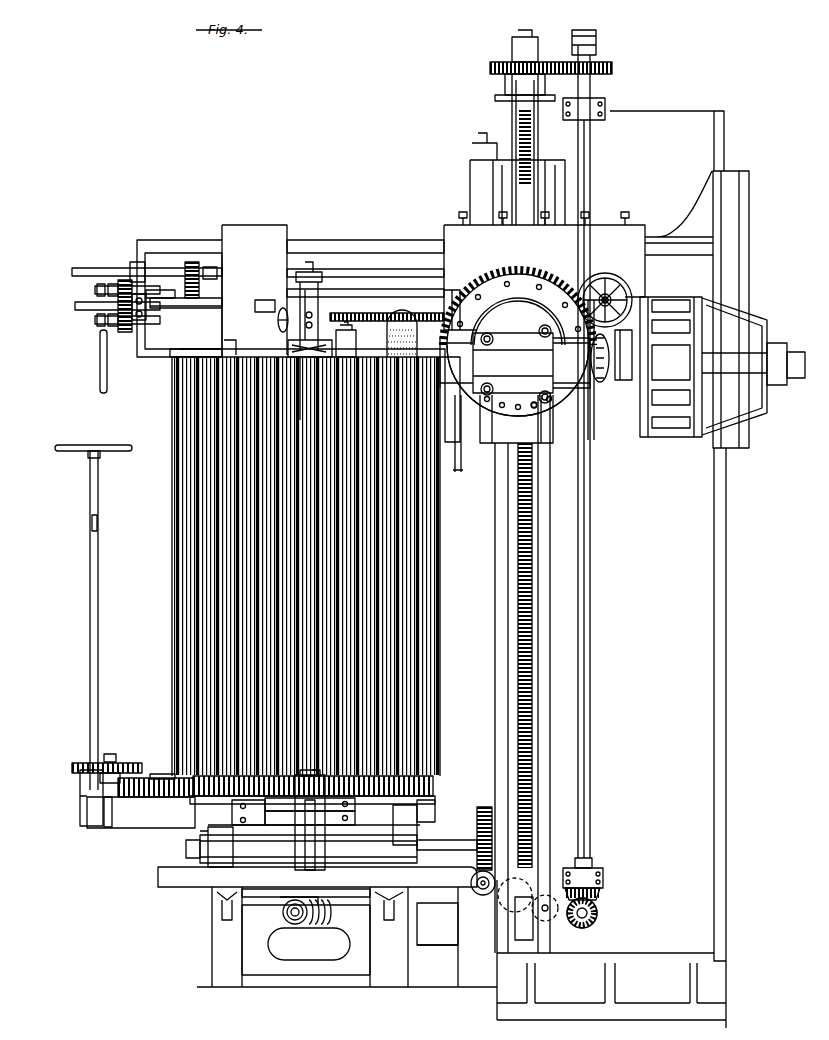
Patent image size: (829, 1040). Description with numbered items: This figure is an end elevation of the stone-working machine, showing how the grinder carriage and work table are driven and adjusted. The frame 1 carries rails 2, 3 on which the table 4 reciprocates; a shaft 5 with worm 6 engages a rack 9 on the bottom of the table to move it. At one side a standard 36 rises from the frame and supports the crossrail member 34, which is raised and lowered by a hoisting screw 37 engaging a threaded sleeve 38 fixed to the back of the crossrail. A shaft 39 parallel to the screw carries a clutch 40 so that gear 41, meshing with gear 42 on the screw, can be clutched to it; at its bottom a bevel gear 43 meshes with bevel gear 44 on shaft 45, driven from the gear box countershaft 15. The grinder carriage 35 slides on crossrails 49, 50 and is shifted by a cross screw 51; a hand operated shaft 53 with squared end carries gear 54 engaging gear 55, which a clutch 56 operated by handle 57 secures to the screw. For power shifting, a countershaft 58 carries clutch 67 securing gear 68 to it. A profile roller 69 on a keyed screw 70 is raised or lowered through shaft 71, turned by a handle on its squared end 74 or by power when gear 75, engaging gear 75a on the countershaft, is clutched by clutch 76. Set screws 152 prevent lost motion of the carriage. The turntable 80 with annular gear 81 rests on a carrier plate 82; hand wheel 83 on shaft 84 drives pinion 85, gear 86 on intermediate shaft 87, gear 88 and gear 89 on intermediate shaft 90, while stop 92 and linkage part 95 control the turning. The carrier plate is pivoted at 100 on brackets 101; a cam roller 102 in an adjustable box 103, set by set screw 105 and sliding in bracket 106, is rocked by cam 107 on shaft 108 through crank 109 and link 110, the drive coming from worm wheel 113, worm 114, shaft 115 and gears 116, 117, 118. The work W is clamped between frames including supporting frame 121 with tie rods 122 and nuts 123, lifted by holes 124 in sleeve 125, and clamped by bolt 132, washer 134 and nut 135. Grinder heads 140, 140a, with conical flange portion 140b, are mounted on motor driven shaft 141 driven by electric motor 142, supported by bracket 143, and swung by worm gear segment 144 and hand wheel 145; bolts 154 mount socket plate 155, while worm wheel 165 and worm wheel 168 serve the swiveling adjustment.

The frame 1 is at (202, 948).
The rail 2 is at (212, 898).
The rail 3 is at (400, 914).
The table 4 is at (158, 877).
The shaft 5 is at (356, 912).
The worm 6 is at (284, 902).
The rack 9 is at (308, 897).
The countershaft 15 is at (548, 895).
The crossrail member 34 is at (136, 247).
The grinder carriage 35 is at (544, 277).
The standard 36 is at (718, 624).
The hoisting screw 37 is at (518, 636).
The threaded sleeve 38 is at (520, 191).
The shaft 39 is at (575, 553).
The clutch 40 is at (596, 34).
The gear 41 is at (612, 68).
The gear 42 is at (490, 66).
The bevel gear 43 is at (602, 892).
The bevel gear 44 is at (598, 915).
The shaft 45 is at (580, 928).
The crossrail 49 is at (380, 240).
The crossrail 50 is at (175, 360).
The cross screw 51 is at (184, 315).
The hand operated shaft 53 is at (75, 306).
The gear 54 is at (148, 298).
The gear 55 is at (124, 334).
The clutch 56 is at (100, 326).
The handle 57 is at (100, 370).
The countershaft 58 is at (447, 282).
The clutch 67 is at (95, 289).
The gear 68 is at (130, 266).
The profile roller 69 is at (458, 474).
The screw 70 is at (516, 419).
The shaft 71 is at (400, 269).
The squared end 74 is at (72, 270).
The gear 75 is at (192, 260).
The gear 75a is at (258, 301).
The clutch 76 is at (245, 290).
The turntable 80 is at (435, 798).
The annular gear 81 is at (240, 790).
The carrier plate 82 is at (172, 808).
The hand wheel 83 is at (62, 452).
The shaft 84 is at (90, 645).
The pinion 85 is at (82, 778).
The gear 86 is at (75, 763).
The intermediate shaft 87 is at (110, 754).
The gear 88 is at (110, 810).
The gear 89 is at (140, 797).
The intermediate shaft 90 is at (158, 774).
The stop 92 is at (115, 773).
The linkage part 95 is at (98, 522).
The pivot 100 is at (350, 828).
The bracket 101 is at (215, 858).
The cam roller 102 is at (355, 803).
The adjustable box 103 is at (300, 775).
The set screw 105 is at (316, 766).
The bracket 106 is at (268, 820).
The cam 107 is at (310, 848).
The shaft 108 is at (262, 855).
The crank 109 is at (417, 824).
The link 110 is at (435, 806).
The worm wheel 113 is at (485, 806).
The worm 114 is at (478, 896).
The shaft 115 is at (470, 870).
The gear 116 is at (437, 933).
The gear 117 is at (490, 928).
The gear 118 is at (530, 942).
The supporting frame 121 is at (313, 388).
The tie rod 122 is at (387, 308).
The nut 123 is at (356, 332).
The hole 124 is at (318, 340).
The sleeve 125 is at (300, 300).
The clamping bolt 132 is at (318, 284).
The washer 134 is at (335, 292).
The nut 135 is at (300, 282).
The grinder head 140 is at (305, 315).
The grinder head 140a is at (404, 322).
The conical flange grinding portion 140b is at (278, 318).
The motor driven shaft 141 is at (228, 345).
The electric motor 142 is at (684, 437).
The bracket 143 is at (192, 352).
The worm gear segment 144 is at (535, 272).
The hand wheel 145 is at (606, 273).
The set screw 152 is at (588, 212).
The bolt 154 is at (546, 312).
The socket plate 155 is at (540, 415).
The worm wheel 165 is at (625, 366).
The worm wheel 168 is at (618, 296).
The work W is at (185, 617).